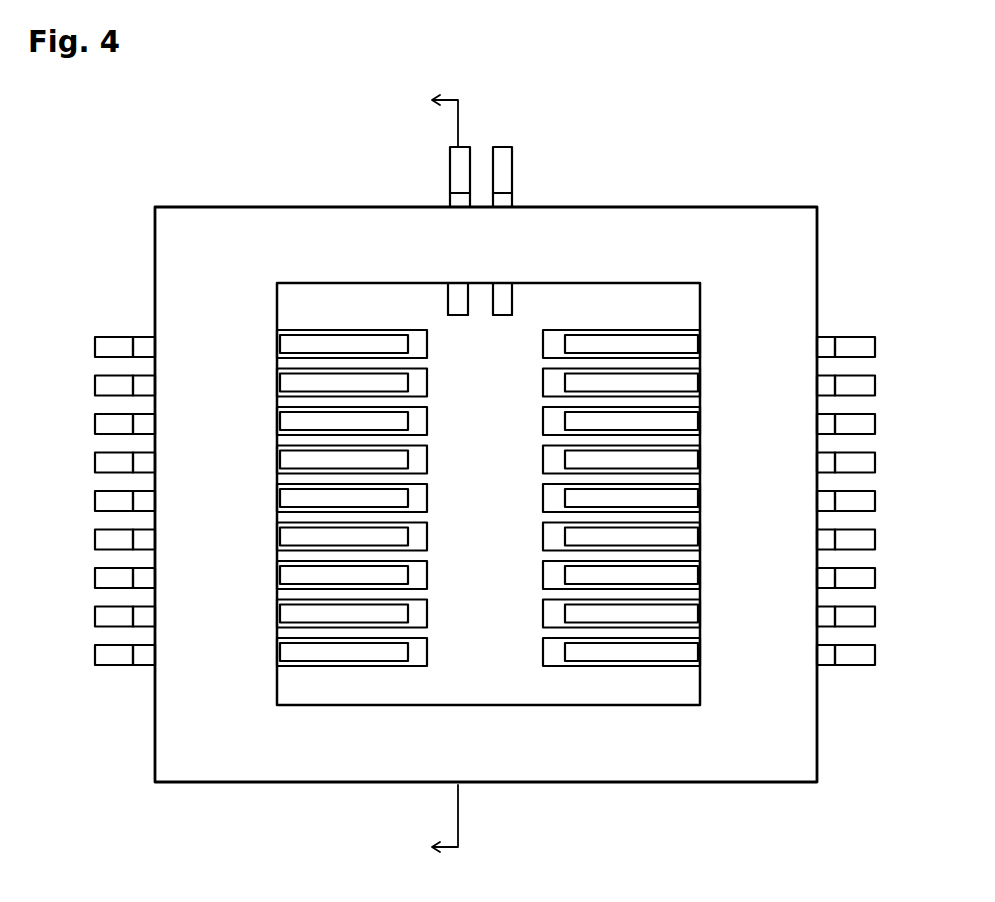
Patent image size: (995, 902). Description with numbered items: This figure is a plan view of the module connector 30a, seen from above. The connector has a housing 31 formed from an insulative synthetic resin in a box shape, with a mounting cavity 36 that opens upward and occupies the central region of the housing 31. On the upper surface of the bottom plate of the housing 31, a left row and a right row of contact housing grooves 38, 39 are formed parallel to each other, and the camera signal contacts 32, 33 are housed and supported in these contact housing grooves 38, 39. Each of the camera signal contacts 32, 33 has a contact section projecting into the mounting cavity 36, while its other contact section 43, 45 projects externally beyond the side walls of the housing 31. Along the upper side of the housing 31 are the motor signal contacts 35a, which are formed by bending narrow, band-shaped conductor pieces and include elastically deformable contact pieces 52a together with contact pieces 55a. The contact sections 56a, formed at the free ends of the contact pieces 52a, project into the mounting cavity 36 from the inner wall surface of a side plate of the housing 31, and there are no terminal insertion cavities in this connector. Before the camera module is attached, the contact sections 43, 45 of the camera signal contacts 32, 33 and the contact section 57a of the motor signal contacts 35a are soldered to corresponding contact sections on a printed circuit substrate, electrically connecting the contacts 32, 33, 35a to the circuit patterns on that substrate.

The module connector 30a is at (771, 170).
The housing 31 is at (168, 768).
The camera signal contact 32 is at (310, 660).
The camera signal contact 33 is at (634, 656).
The motor signal contact 35a is at (462, 165).
The mounting cavity 36 is at (288, 303).
The contact housing groove 38 is at (422, 660).
The contact housing groove 39 is at (548, 660).
The contact section 43 is at (119, 665).
The contact section 45 is at (863, 666).
The contact piece 52a is at (452, 299).
The contact piece 55a is at (512, 187).
The contact section 56a is at (456, 316).
The contact section 57a is at (507, 162).